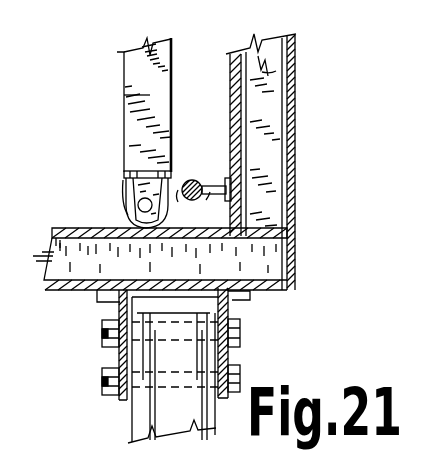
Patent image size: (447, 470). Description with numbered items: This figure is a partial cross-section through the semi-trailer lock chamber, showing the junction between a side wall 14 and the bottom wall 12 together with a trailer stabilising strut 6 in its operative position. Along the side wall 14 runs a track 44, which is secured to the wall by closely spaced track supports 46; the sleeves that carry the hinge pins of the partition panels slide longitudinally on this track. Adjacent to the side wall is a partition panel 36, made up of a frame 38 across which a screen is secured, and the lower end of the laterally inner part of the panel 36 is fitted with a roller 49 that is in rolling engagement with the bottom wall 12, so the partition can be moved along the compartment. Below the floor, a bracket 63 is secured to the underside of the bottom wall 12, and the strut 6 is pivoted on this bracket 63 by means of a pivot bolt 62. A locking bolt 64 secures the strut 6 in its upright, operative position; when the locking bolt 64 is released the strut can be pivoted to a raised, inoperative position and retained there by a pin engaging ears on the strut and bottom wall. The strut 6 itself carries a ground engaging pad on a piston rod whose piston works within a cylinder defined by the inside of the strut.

The stabilising strut 6 is at (141, 412).
The bottom wall 12 is at (50, 282).
The side wall 14 is at (286, 90).
The partition panel 36 is at (126, 96).
The frame 38 is at (136, 142).
The track 44 is at (190, 180).
The track support 46 is at (207, 185).
The roller 49 is at (127, 212).
The pivot bolt 62 is at (237, 333).
The bracket 63 is at (112, 357).
The locking bolt 64 is at (238, 384).